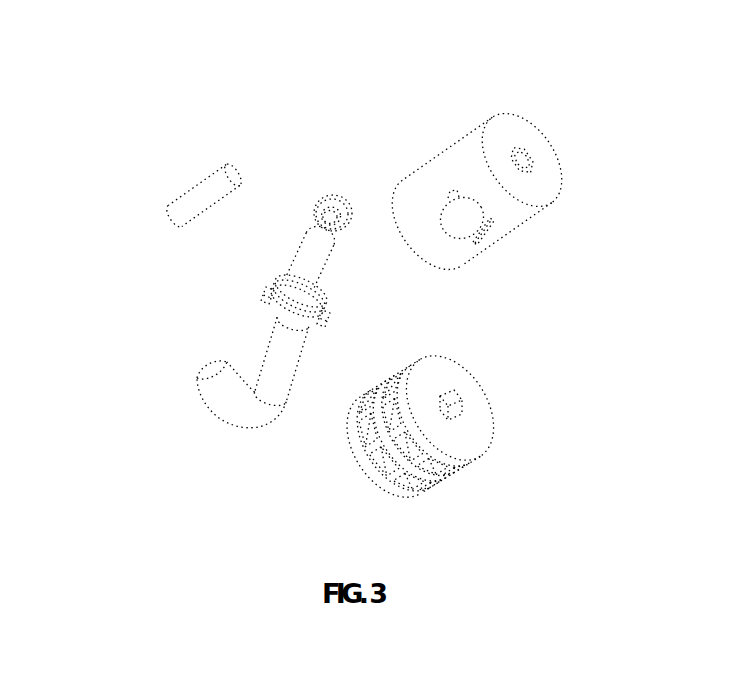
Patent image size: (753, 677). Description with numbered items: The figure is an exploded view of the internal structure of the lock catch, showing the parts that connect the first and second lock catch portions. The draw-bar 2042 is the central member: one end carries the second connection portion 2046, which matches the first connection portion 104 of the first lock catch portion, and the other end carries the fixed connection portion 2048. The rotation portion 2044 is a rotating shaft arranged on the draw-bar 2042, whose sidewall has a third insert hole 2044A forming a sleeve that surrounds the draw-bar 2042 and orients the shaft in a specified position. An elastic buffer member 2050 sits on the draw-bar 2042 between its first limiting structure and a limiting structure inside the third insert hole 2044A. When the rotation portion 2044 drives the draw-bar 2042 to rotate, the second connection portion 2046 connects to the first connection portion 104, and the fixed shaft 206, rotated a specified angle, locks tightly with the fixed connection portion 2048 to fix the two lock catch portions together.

The first connection portion 104 is at (213, 185).
The draw-bar 2042 is at (312, 272).
The rotation portion 2044 is at (500, 133).
The third insert hole 2044A is at (468, 215).
The second connection portion 2046 is at (228, 392).
The fixed connection portion 2048 is at (335, 207).
The elastic buffer member 2050 is at (300, 290).
The fixed shaft 206 is at (437, 415).